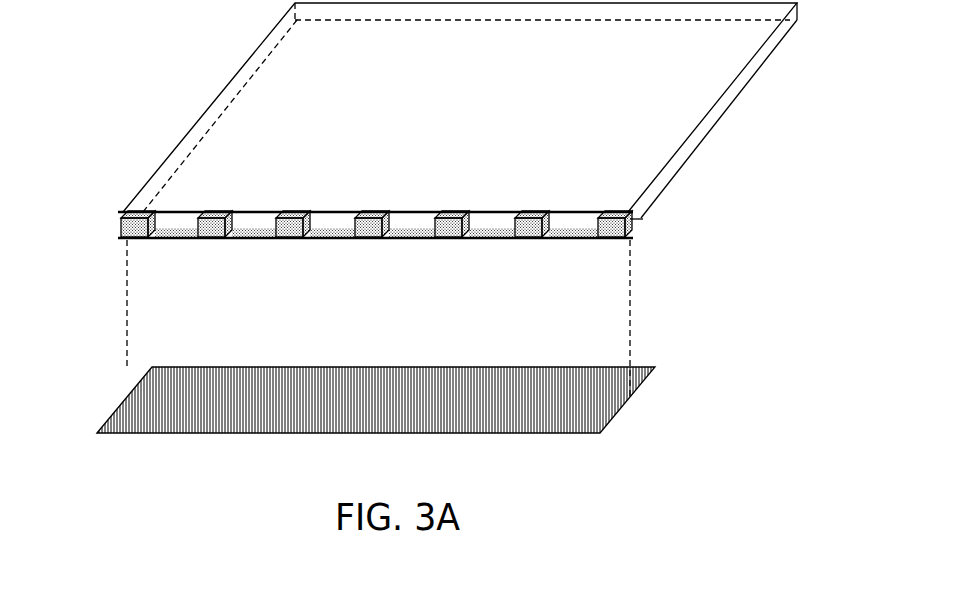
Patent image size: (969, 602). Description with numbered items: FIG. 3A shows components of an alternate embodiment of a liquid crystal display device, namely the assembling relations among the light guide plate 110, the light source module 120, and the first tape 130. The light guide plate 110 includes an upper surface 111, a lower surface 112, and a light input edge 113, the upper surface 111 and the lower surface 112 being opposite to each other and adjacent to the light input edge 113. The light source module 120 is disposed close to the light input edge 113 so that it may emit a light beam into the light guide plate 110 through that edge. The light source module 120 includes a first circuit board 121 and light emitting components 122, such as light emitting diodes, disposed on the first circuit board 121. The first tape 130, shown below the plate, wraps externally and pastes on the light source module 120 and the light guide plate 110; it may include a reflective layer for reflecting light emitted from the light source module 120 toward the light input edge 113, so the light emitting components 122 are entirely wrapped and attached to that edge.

The light guide plate 110 is at (213, 115).
The upper surface 111 is at (695, 83).
The lower surface 112 is at (700, 162).
The light input edge 113 is at (485, 224).
The light source module 120 is at (277, 302).
The first circuit board 121 is at (180, 230).
The light emitting components 122 is at (368, 227).
The first tape 130 is at (157, 408).